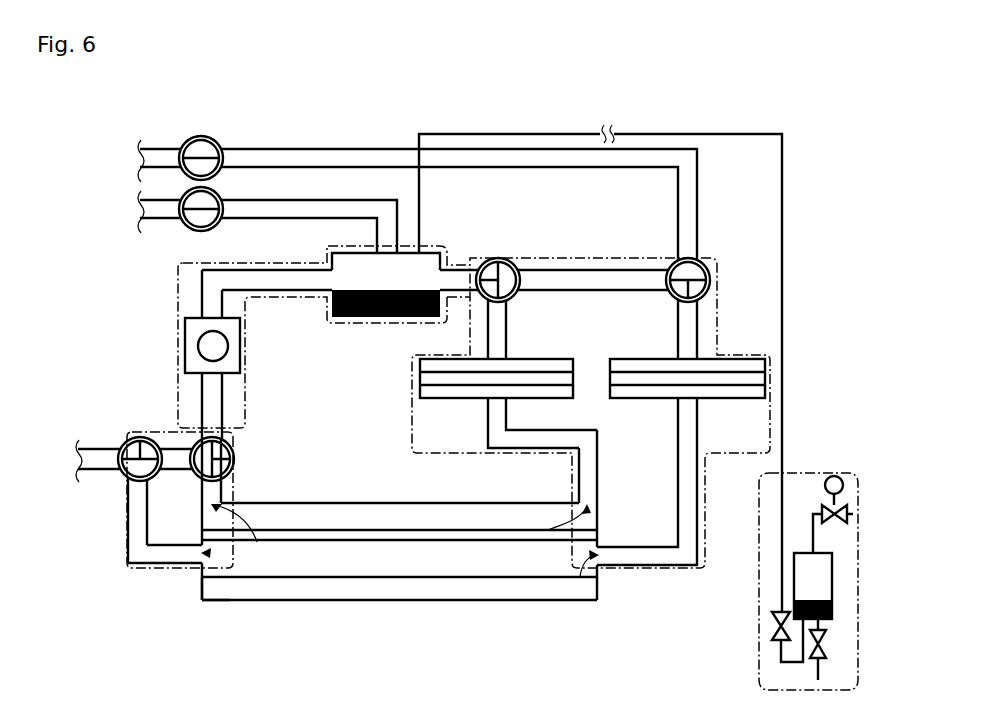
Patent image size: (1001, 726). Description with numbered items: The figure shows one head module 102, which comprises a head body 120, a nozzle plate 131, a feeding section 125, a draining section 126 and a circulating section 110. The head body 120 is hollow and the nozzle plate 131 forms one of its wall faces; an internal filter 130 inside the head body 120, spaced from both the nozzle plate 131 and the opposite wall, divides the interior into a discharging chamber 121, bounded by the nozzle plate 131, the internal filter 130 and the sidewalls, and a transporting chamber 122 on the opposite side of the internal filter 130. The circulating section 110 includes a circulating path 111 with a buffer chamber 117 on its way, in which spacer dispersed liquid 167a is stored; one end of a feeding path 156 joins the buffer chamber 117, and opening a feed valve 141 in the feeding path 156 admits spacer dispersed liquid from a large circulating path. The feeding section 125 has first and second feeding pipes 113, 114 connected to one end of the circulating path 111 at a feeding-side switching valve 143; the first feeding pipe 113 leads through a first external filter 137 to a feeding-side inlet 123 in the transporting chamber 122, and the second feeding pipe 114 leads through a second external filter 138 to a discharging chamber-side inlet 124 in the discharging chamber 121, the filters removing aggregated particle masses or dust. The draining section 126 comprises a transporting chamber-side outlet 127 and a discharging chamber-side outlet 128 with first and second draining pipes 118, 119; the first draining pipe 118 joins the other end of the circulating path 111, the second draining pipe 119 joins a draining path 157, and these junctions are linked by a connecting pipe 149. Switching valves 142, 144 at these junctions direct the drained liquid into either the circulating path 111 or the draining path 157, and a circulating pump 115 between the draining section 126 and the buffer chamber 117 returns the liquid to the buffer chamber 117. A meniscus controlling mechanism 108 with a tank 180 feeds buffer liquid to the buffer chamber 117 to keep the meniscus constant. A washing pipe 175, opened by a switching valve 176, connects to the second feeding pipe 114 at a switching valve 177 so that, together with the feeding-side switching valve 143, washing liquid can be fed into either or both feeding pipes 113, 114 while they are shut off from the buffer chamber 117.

The head module 102 is at (108, 101).
The washing pipe 175 is at (698, 182).
The switching valve 176 is at (180, 172).
The feeding path 156 is at (163, 217).
The feed valve 141 is at (186, 230).
The circulating section 110 is at (178, 304).
The buffer chamber 117 is at (332, 254).
The spacer dispersed liquid 167a is at (362, 322).
The circulating path 111 is at (468, 270).
The circulating pump 115 is at (240, 367).
The feeding-side switching valve 143 is at (498, 258).
The feeding section 125 is at (570, 258).
The switching valve 177 is at (705, 262).
The second feeding pipe 114 is at (612, 270).
The second external filter 138 is at (640, 380).
The first external filter 137 is at (437, 384).
The first feeding pipe 113 is at (506, 329).
The discharging chamber 121 is at (412, 543).
The transporting chamber 122 is at (352, 503).
The feeding-side inlet 123 is at (562, 526).
The discharging chamber-side inlet 124 is at (588, 572).
The internal filter 130 is at (388, 540).
The first draining pipe 118 is at (222, 492).
The discharging chamber-side outlet 128 is at (214, 572).
The transporting chamber-side outlet 127 is at (205, 555).
The connecting pipe 149 is at (168, 468).
The nozzle plate 131 is at (200, 592).
The head body 120 is at (200, 602).
The second draining pipe 119 is at (127, 530).
The draining section 126 is at (137, 432).
The switching valve 144 is at (125, 437).
The draining path 157 is at (88, 450).
The switching valve 142 is at (232, 447).
The meniscus controlling mechanism 108 is at (845, 473).
The tank 180 is at (800, 553).